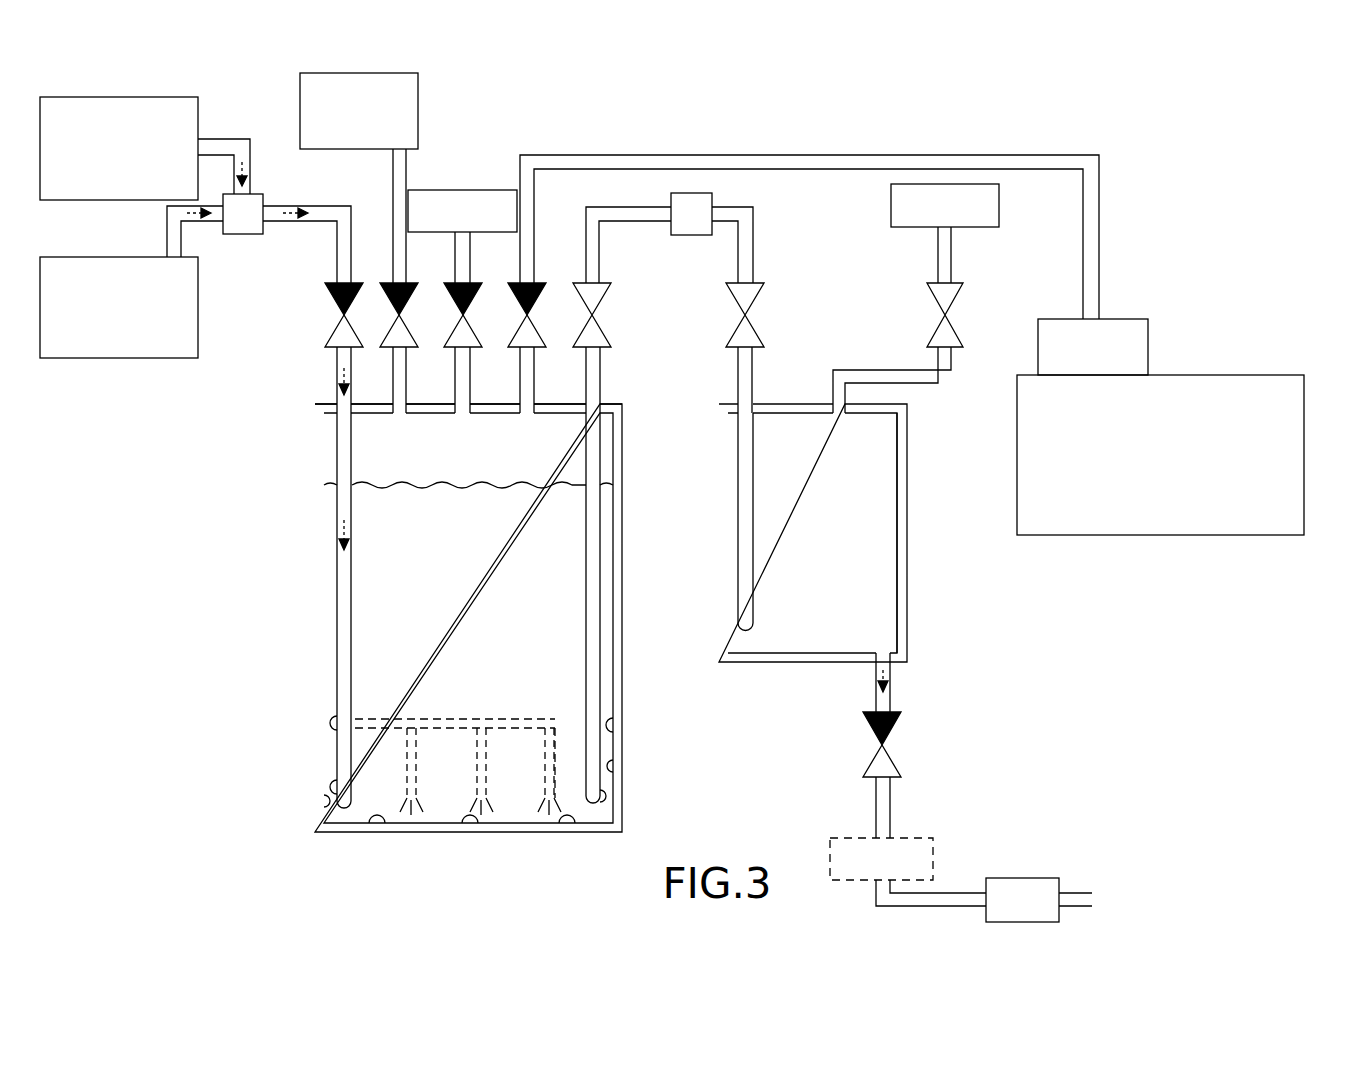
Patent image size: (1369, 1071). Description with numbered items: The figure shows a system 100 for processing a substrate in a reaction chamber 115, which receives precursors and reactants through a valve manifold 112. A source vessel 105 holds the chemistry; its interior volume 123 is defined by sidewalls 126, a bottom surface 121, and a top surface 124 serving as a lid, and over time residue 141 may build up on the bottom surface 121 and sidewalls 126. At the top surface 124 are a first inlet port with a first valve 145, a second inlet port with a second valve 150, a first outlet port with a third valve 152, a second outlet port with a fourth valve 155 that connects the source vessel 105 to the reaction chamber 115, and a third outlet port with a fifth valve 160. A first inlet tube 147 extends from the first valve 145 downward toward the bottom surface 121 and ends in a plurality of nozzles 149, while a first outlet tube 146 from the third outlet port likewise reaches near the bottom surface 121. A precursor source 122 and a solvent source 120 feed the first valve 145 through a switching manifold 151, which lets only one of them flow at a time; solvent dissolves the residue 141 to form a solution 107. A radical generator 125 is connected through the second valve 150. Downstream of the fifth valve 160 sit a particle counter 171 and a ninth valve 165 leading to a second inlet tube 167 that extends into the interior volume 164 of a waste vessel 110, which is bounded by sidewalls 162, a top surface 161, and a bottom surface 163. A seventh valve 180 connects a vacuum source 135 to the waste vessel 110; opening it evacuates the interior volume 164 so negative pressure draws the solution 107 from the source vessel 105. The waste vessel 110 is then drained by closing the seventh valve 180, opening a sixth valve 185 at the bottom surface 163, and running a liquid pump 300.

The system 100 is at (1276, 151).
The source vessel 105 is at (324, 558).
The solution 107 is at (453, 558).
The waste vessel 110 is at (903, 548).
The valve manifold 112 is at (1148, 330).
The reaction chamber 115 is at (1304, 392).
The solvent source 120 is at (135, 358).
The bottom surface 121 is at (583, 822).
The precursor source 122 is at (170, 97).
The interior volume 123 is at (381, 439).
The top surface 124 is at (622, 404).
The radical generator 125 is at (418, 125).
The sidewalls 126 is at (330, 630).
The vacuum source 135 is at (460, 190).
The residue 141 is at (335, 742).
The first valve 145 is at (325, 337).
The first outlet tube 146 is at (590, 466).
The first inlet tube 147 is at (343, 452).
The nozzles 149 is at (478, 720).
The second valve 150 is at (408, 281).
The switching manifold 151 is at (246, 234).
The third valve 152 is at (471, 281).
The fourth valve 155 is at (516, 340).
The fifth valve 160 is at (600, 335).
The top surface 161 is at (852, 367).
The sidewalls 162 is at (900, 500).
The bottom surface 163 is at (866, 650).
The interior volume 164 is at (797, 624).
The ninth valve 165 is at (735, 312).
The second inlet tube 167 is at (745, 466).
The particle counter 171 is at (682, 193).
The seventh valve 180 is at (930, 325).
The sixth valve 185 is at (895, 730).
The liquid pump 300 is at (1023, 878).